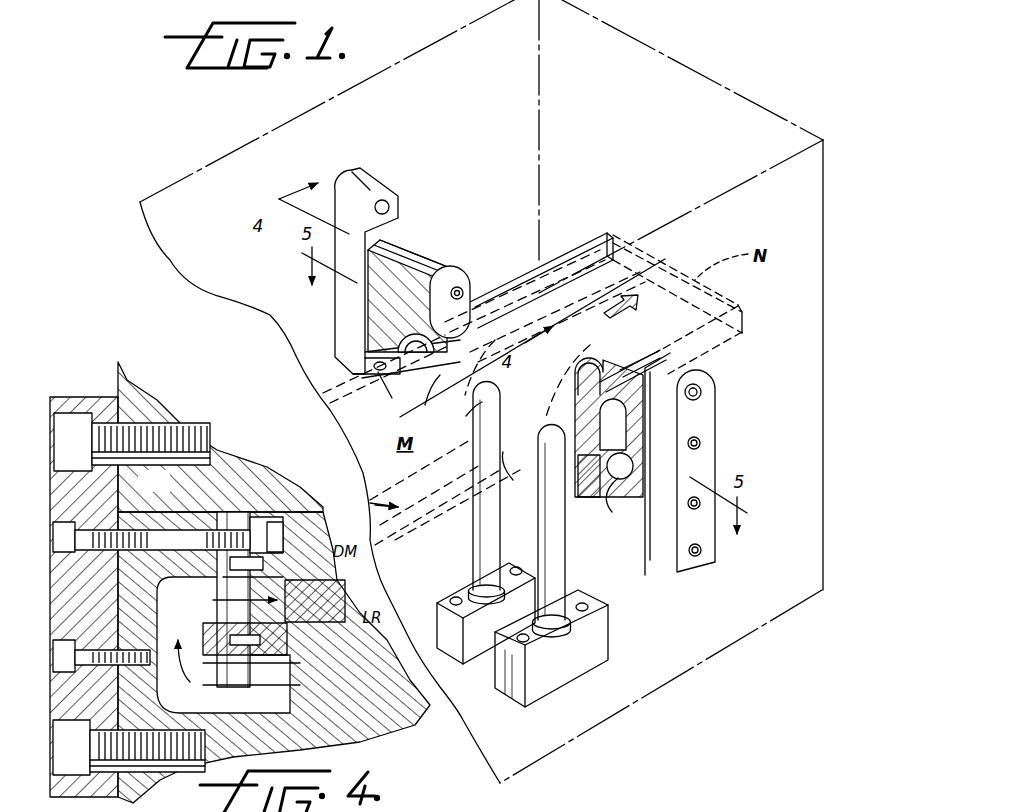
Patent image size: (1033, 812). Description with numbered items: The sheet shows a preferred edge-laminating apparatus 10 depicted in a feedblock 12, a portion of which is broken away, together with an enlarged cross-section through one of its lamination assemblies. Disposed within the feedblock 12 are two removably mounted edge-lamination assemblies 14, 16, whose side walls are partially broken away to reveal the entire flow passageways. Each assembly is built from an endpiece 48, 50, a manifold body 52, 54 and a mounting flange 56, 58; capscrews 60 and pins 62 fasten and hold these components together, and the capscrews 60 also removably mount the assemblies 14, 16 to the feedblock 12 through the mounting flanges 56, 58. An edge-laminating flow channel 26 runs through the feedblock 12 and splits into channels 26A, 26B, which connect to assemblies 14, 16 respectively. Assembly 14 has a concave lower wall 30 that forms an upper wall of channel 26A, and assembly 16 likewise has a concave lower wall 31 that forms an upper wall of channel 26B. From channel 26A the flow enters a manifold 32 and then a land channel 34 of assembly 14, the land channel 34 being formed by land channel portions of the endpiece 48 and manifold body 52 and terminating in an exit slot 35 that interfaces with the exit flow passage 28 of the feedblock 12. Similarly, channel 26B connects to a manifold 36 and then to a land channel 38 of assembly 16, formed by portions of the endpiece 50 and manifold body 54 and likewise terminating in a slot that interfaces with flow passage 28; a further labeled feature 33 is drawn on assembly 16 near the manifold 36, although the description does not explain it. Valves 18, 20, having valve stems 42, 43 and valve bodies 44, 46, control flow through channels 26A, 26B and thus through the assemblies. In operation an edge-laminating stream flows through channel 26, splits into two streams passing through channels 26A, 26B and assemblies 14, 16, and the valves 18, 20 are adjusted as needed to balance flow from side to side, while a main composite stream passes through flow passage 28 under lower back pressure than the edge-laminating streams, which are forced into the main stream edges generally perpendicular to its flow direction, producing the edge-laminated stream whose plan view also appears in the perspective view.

In FIG. 1, the edge-laminating apparatus 10 is at (558, 248).
In FIG. 1, the feedblock 12 is at (660, 55).
In FIG. 4, the feedblock 12 is at (220, 437).
In FIG. 1, the edge-lamination assembly 14 is at (412, 230).
In FIG. 4, the edge-lamination assembly 14 is at (192, 497).
In FIG. 1, the edge-lamination assembly 16 is at (717, 413).
In FIG. 1, the valve 18 is at (518, 522).
In FIG. 1, the valve 20 is at (573, 561).
In FIG. 4, the edge-laminating flow channel 26 is at (434, 548).
In FIG. 1, the channel 26A is at (528, 307).
In FIG. 4, the channel 26A is at (370, 700).
In FIG. 1, the channel 26B is at (507, 408).
In FIG. 4, the flow passage 28 is at (285, 640).
In FIG. 1, the concave lower wall 30 is at (426, 400).
In FIG. 4, the concave lower wall 30 is at (226, 672).
In FIG. 1, the concave lower wall 31 is at (618, 506).
In FIG. 1, the manifold 32 is at (396, 300).
In FIG. 4, the manifold 32 is at (223, 645).
In FIG. 1, the lug 33 is at (592, 391).
In FIG. 4, the land channel 34 is at (360, 612).
In FIG. 1, the exit slot 35 is at (392, 394).
In FIG. 4, the exit slot 35 is at (300, 550).
In FIG. 1, the manifold 36 is at (630, 438).
In FIG. 1, the land channel 38 is at (620, 468).
In FIG. 1, the valve stem 42 is at (462, 421).
In FIG. 1, the valve stem 43 is at (517, 476).
In FIG. 1, the valve body 44 is at (450, 652).
In FIG. 1, the valve body 46 is at (557, 678).
In FIG. 1, the endpiece 48 is at (462, 272).
In FIG. 4, the endpiece 48 is at (263, 513).
In FIG. 1, the endpiece 50 is at (600, 357).
In FIG. 1, the manifold body 52 is at (410, 258).
In FIG. 4, the manifold body 52 is at (213, 512).
In FIG. 1, the manifold body 54 is at (608, 380).
In FIG. 1, the flange 56 is at (370, 176).
In FIG. 4, the flange 56 is at (78, 408).
In FIG. 1, the flange 58 is at (698, 364).
In FIG. 1, the capscrew 60 is at (465, 292).
In FIG. 4, the capscrew 60 is at (157, 427).
In FIG. 4, the pin 62 is at (253, 650).